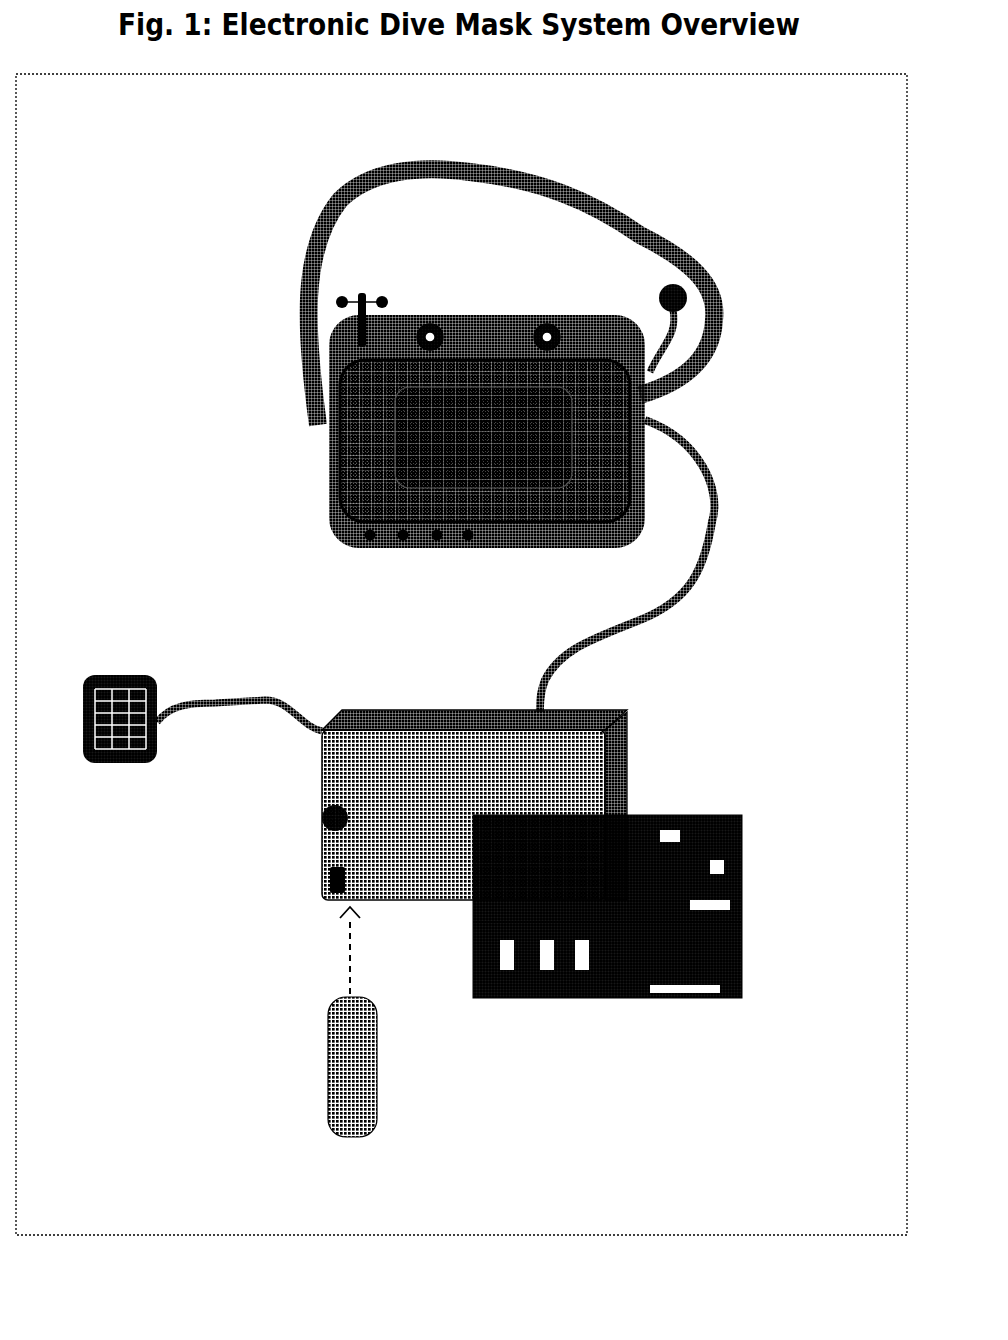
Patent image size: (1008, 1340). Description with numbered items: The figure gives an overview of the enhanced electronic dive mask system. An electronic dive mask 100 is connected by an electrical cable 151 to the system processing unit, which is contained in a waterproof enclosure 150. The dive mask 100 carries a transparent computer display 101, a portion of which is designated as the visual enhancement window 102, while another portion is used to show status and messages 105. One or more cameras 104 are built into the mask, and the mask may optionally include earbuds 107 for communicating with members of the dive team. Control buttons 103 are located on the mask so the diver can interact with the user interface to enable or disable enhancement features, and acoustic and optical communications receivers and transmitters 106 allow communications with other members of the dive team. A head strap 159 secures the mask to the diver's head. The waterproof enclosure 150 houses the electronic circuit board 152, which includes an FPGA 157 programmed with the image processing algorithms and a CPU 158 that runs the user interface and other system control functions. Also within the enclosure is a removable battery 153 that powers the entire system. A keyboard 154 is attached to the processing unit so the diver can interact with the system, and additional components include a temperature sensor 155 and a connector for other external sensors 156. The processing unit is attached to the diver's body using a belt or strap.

The electronic dive mask 100 is at (662, 410).
The transparent computer display 101 is at (365, 408).
The visual enhancement window 102 is at (405, 466).
The control buttons 103 is at (400, 548).
The cameras 104 is at (537, 310).
The status and messages 105 is at (517, 512).
The acoustic and optical communications receivers and transmitters 106 is at (315, 290).
The earbuds 107 is at (690, 320).
The system processing unit waterproof enclosure 150 is at (632, 775).
The electrical cable 151 is at (674, 566).
The electronic circuit board 152 is at (622, 1005).
The removable battery 153 is at (326, 1100).
The keyboard 154 is at (202, 744).
The temperature sensor 155 is at (322, 825).
The temperature sensor and connector for other external sensors 156 is at (325, 892).
The FPGA 157 is at (473, 922).
The CPU 158 is at (745, 922).
The head strap 159 is at (400, 182).